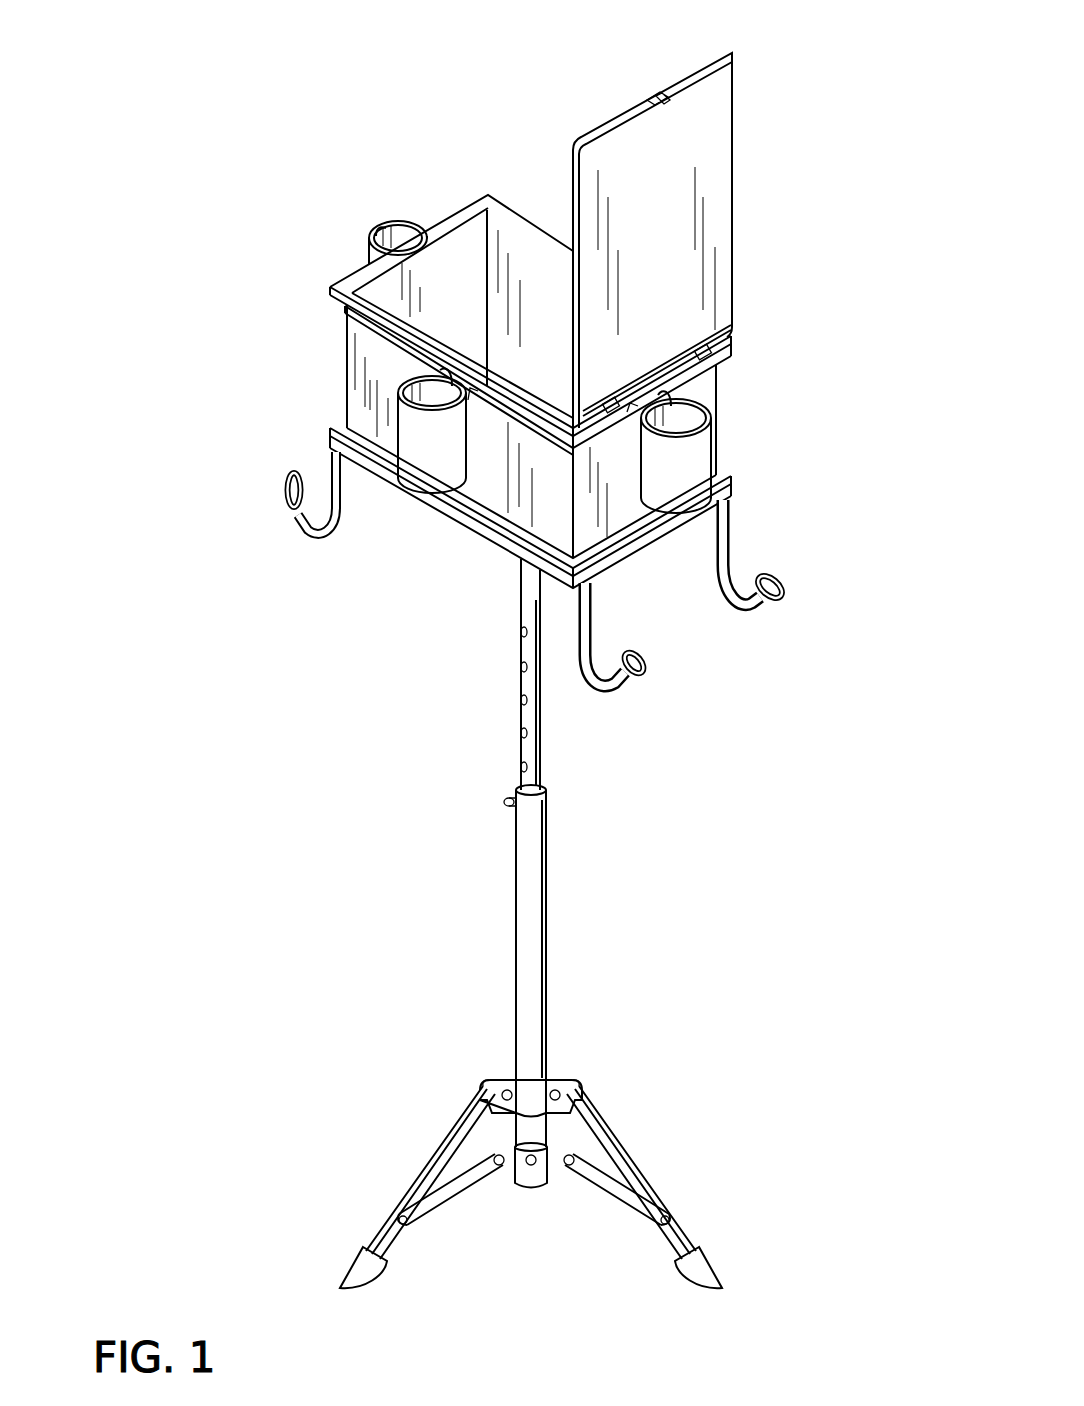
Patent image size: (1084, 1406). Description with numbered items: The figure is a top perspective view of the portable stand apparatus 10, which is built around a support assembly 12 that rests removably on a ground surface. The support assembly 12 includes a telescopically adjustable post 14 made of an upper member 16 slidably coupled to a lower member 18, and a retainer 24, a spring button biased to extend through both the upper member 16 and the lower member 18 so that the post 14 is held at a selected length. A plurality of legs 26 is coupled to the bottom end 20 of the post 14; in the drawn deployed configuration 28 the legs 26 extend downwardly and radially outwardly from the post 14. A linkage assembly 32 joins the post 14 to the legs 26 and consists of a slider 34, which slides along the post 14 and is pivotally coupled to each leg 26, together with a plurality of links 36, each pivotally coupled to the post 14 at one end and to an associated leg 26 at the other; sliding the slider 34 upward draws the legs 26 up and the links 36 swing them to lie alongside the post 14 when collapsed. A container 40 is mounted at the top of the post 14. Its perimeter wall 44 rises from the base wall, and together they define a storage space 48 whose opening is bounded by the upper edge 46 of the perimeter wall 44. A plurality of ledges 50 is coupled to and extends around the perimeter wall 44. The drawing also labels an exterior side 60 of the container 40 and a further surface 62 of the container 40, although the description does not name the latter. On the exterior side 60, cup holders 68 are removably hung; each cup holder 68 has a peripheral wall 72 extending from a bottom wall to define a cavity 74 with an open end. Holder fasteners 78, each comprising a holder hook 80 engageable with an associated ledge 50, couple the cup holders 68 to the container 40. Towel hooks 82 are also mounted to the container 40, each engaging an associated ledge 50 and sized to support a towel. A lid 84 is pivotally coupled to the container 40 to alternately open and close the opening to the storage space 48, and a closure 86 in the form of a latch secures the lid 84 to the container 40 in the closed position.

The portable stand apparatus 10 is at (172, 134).
The support assembly 12 is at (685, 886).
The post 14 is at (467, 937).
The upper member 16 is at (532, 717).
The lower member 18 is at (538, 943).
The bottom end 20 is at (533, 1185).
The retainer 24 is at (512, 803).
The legs 26 is at (448, 1152).
The deployed configuration 28 is at (722, 1205).
The linkage assembly 32 is at (628, 1068).
The slider 34 is at (500, 1076).
The links 36 is at (452, 1193).
The container 40 is at (272, 355).
The perimeter wall 44 is at (362, 373).
The upper edge 46 is at (467, 213).
The storage space 48 is at (515, 240).
The ledges 50 is at (330, 286).
The exterior side 60 is at (353, 400).
The inner side panel 62 is at (382, 287).
The cup holders 68 is at (385, 176).
The peripheral wall 72 is at (403, 230).
The cavity 74 is at (362, 212).
The holder fasteners 78 is at (497, 438).
The holder hook 80 is at (670, 393).
The towel hooks 82 is at (295, 524).
The lid 84 is at (708, 157).
The closure 86 is at (657, 87).